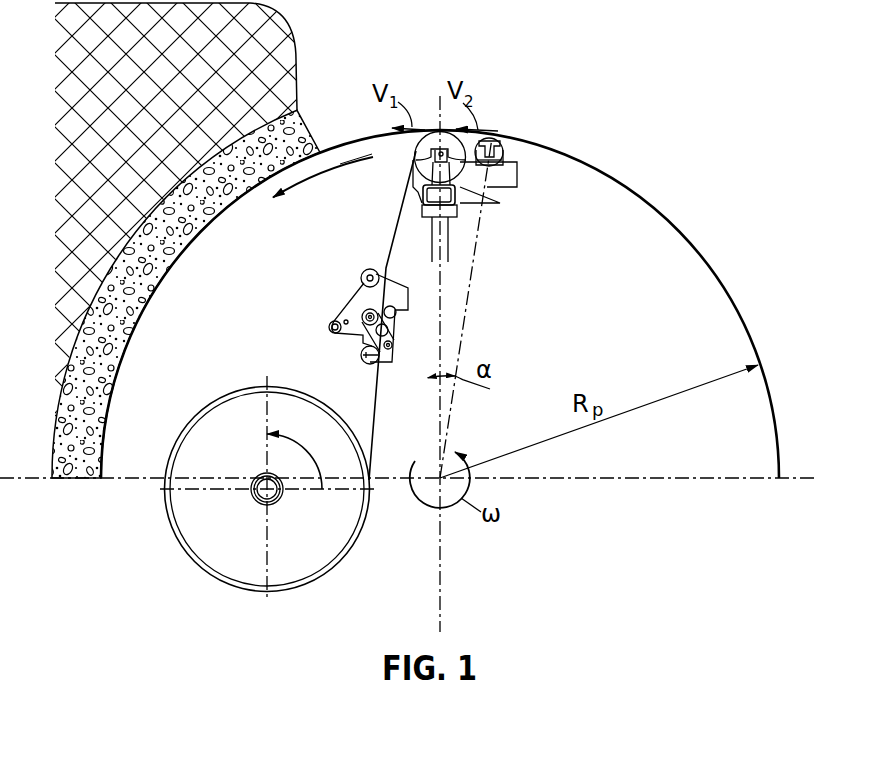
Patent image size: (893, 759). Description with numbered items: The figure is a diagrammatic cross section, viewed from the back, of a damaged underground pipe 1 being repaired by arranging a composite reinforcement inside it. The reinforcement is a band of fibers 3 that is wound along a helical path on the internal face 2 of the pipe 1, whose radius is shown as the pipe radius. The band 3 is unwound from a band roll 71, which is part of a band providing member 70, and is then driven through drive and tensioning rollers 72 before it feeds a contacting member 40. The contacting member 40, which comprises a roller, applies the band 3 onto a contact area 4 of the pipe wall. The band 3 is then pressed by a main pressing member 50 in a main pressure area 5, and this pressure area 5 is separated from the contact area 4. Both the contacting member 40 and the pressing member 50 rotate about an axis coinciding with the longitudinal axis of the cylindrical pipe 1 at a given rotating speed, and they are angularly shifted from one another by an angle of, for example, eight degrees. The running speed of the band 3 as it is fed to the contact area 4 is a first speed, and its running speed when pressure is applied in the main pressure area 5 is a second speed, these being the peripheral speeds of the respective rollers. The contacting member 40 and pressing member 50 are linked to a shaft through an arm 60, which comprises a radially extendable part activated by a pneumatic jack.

The damaged underground pipe 1 is at (157, 207).
The internal face 2 is at (667, 222).
The band of fibers 3 is at (377, 411).
The contact area 4 is at (439, 129).
The main pressure area 5 is at (491, 136).
The contacting member 40 is at (427, 128).
The main pressing member 50 is at (500, 130).
The arm 60 is at (451, 242).
The band providing member 70 is at (248, 383).
The band roll 71 is at (213, 403).
The drive and tensioning rollers 72 is at (341, 318).